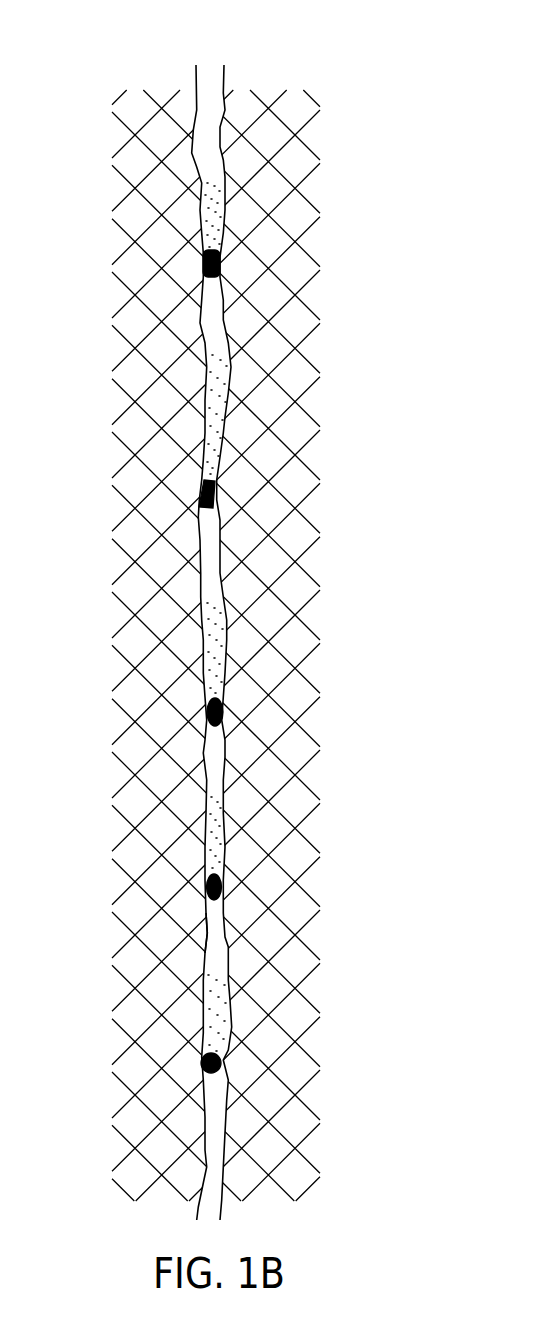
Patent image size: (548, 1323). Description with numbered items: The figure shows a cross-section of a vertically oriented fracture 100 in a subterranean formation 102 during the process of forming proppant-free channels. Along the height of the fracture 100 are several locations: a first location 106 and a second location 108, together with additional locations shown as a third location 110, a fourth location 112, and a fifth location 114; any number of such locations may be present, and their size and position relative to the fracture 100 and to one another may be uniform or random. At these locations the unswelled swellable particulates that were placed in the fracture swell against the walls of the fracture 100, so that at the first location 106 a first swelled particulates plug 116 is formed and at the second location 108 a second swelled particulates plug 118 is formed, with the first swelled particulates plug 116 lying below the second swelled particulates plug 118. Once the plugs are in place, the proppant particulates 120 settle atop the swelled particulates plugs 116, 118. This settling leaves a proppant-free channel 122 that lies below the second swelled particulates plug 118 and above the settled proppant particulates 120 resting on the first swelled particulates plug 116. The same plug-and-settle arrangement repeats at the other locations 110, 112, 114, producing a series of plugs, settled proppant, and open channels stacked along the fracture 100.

The fracture 100 is at (230, 612).
The subterranean formation 102 is at (173, 562).
The first location 106 is at (230, 1058).
The second location 108 is at (230, 880).
The third location 110 is at (340, 666).
The fourth location 112 is at (340, 449).
The fifth location 114 is at (340, 222).
The first swelled particulates plug 116 is at (207, 1063).
The second swelled particulates plug 118 is at (207, 882).
The proppant particulates 120 is at (203, 832).
The proppant-free channel 122 is at (207, 937).